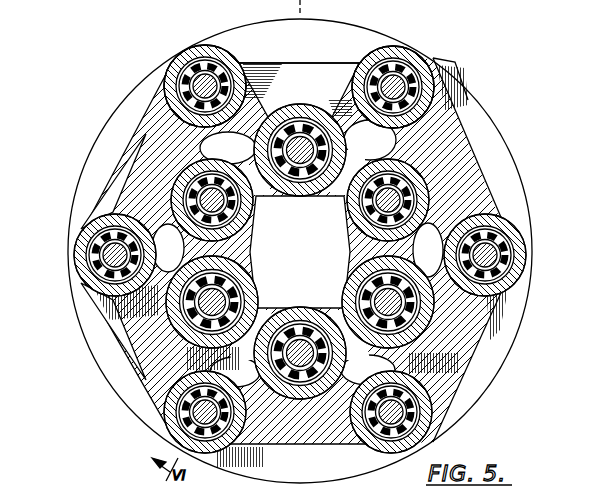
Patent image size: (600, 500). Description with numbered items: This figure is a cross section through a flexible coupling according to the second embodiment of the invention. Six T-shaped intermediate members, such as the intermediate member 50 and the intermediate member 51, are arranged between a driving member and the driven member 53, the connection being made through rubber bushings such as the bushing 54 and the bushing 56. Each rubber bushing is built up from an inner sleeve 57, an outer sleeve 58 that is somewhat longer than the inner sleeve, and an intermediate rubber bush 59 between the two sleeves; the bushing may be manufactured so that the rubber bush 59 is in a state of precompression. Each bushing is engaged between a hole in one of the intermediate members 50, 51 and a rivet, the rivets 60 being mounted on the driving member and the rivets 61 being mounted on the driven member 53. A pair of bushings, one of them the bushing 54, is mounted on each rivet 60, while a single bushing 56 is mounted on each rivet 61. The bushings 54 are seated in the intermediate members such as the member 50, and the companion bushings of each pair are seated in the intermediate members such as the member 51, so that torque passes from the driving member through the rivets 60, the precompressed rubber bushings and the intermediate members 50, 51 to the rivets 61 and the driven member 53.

The T-shaped intermediate member 50 is at (470, 176).
The T-shaped intermediate member 51 is at (316, 72).
The driven member 53 is at (510, 184).
The rubber bushing 54 is at (187, 84).
The rubber bushing 56 is at (233, 212).
The inner sleeve 57 is at (420, 62).
The outer sleeve 58 is at (390, 62).
The intermediate rubber bush 59 is at (410, 103).
The rivet 60 is at (196, 78).
The rivet 61 is at (276, 292).